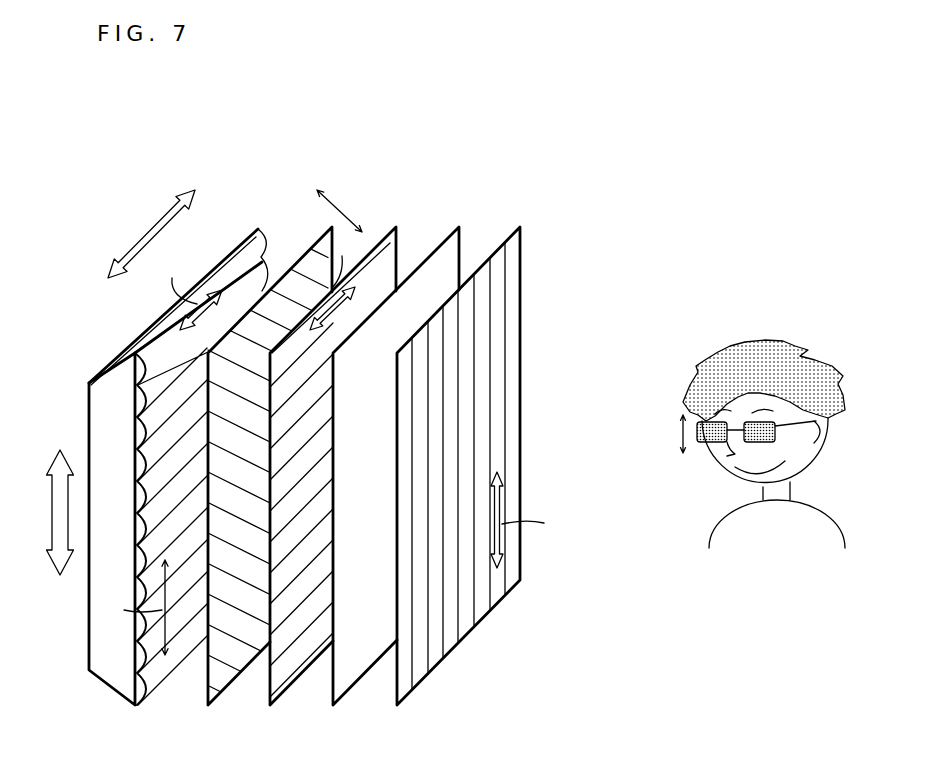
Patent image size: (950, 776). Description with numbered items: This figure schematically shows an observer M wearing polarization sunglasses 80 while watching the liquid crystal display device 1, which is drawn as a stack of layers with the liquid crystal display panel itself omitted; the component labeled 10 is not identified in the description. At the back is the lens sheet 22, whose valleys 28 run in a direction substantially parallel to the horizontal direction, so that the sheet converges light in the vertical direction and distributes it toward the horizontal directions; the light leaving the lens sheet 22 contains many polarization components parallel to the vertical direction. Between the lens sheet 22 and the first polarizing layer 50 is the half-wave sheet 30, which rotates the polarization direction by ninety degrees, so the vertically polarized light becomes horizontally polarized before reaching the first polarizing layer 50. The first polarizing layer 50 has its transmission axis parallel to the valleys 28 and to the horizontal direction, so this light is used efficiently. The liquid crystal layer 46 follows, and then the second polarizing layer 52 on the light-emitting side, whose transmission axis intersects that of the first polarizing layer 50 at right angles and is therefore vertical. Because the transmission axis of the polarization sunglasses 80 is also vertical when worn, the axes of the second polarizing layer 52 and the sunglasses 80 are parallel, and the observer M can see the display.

The liquid crystal display device 1 is at (270, 165).
The lens sheet 10 is at (106, 369).
The lens sheet 22 is at (166, 678).
The valleys 28 is at (183, 636).
The λ/2 sheet 30 is at (228, 676).
The first polarizing layer 50 is at (294, 675).
The liquid crystal layer 46 is at (359, 675).
The second polarizing layer 52 is at (424, 675).
The polarization sunglasses 80 is at (707, 424).
The observer M is at (780, 314).